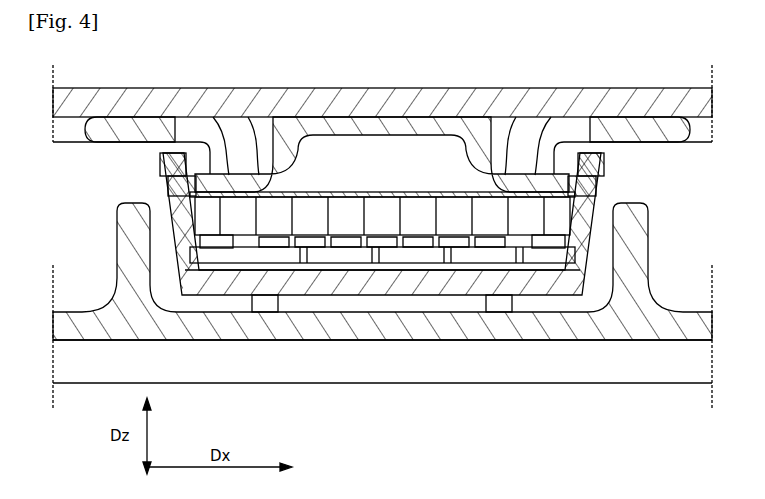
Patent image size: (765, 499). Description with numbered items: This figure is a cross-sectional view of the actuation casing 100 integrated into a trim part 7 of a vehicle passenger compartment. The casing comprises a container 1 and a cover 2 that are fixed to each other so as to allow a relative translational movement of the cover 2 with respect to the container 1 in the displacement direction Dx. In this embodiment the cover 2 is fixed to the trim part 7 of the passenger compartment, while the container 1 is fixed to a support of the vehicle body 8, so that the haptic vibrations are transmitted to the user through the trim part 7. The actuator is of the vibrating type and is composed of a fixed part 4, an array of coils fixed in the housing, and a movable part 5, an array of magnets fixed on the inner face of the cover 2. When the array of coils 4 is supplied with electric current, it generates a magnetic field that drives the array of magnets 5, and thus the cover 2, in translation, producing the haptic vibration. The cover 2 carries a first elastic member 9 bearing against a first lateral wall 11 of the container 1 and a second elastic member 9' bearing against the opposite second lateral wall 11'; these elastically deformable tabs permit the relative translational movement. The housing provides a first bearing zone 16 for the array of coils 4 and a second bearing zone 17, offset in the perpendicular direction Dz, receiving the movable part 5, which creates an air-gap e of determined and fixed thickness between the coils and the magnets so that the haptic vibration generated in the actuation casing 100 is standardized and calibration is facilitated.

The container 1 is at (122, 160).
The cover 2 is at (645, 130).
The fixed part (array of coils) 4 is at (480, 248).
The movable part (array of magnets) 5 is at (420, 215).
The trim part 7 is at (625, 103).
The vehicle body 8 is at (696, 325).
The first elastic member 9 is at (622, 188).
The second elastic member 9' is at (143, 185).
The first lateral wall 11 is at (625, 164).
The second lateral wall 11' is at (142, 119).
The first bearing zone 16 is at (228, 280).
The second bearing zone 17 is at (190, 262).
The actuation casing 100 is at (371, 271).
The air-gap e is at (496, 232).